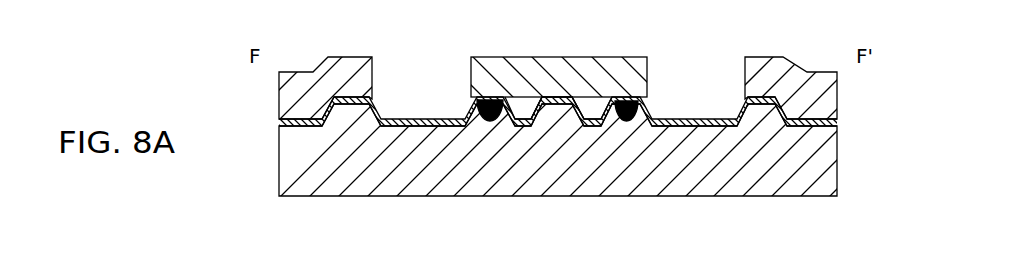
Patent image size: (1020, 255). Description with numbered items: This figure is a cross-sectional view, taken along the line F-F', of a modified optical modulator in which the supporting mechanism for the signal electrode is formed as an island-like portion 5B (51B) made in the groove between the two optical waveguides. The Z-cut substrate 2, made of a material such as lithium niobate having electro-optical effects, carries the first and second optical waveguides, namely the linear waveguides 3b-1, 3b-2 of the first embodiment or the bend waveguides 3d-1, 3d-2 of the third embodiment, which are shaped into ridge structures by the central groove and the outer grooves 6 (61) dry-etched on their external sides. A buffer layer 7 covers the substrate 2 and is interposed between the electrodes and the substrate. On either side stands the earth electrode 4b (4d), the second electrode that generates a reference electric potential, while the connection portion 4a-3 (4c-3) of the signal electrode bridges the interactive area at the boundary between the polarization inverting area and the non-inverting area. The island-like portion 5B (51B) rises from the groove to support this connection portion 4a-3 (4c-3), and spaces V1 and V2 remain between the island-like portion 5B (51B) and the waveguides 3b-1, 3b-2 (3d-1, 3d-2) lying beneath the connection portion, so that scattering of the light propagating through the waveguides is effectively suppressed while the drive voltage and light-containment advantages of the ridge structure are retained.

The substrate 2 is at (815, 170).
The buffer layer 7 is at (279, 125).
The outer grooves 6 is at (560, 105).
The outer grooves 61 is at (422, 119).
The earth electrode 4b is at (567, 69).
The earth electrode 4d is at (333, 58).
The connection portions 4a-3 is at (550, 56).
The connection portions 4c-3 is at (558, 57).
The space V1 is at (523, 107).
The space V2 is at (593, 105).
The island-like portion 5B is at (551, 167).
The island-like portion 51B is at (565, 100).
The linear waveguide 3b-1 is at (451, 168).
The bend waveguide 3d-1 is at (486, 104).
The linear waveguide 3b-2 is at (650, 169).
The bend waveguide 3d-2 is at (627, 104).